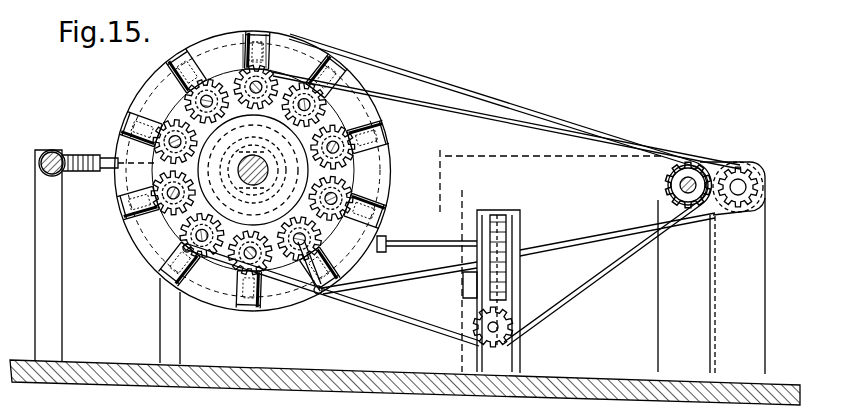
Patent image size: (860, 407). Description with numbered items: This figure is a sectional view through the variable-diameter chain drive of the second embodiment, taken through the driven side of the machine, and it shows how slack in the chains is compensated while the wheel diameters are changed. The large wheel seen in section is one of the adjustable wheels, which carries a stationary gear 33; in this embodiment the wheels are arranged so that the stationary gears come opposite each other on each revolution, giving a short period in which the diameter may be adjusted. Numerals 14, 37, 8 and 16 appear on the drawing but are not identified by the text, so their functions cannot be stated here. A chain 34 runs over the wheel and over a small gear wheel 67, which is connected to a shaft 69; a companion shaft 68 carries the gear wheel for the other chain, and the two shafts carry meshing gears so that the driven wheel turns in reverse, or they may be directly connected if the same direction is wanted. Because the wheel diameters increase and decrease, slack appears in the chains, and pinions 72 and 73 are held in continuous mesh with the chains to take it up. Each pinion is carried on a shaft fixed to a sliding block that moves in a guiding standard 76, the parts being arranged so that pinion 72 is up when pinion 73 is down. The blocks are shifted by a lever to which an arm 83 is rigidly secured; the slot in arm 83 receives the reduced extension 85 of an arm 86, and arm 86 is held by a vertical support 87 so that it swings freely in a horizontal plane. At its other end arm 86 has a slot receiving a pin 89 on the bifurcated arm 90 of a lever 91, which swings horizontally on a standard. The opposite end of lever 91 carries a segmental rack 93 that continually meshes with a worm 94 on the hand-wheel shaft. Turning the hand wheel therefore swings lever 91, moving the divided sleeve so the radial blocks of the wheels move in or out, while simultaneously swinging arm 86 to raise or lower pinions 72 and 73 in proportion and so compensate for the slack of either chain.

The feed wheel casing / frame 14 is at (118, 130).
The stationary gear 33 is at (282, 70).
The pawl block 37 is at (259, 31).
The spring 8 is at (255, 51).
The bifurcated arm 90 is at (253, 170).
The pin 89 is at (259, 172).
The worm 94 is at (53, 150).
The segmental rack 93 is at (88, 172).
The lever 91 is at (160, 326).
The chain 34 is at (606, 122).
The frame plate 16 is at (552, 261).
The shaft 69 is at (691, 177).
The shaft 68 is at (741, 179).
The small gear wheel 67 is at (642, 268).
The guiding standard 76 is at (516, 291).
The pinion 72 is at (508, 238).
The pinion 73 is at (471, 324).
The arm 83 is at (461, 288).
The reduced extension 85 is at (410, 240).
The arm 86 is at (387, 267).
The vertical support 87 is at (386, 283).